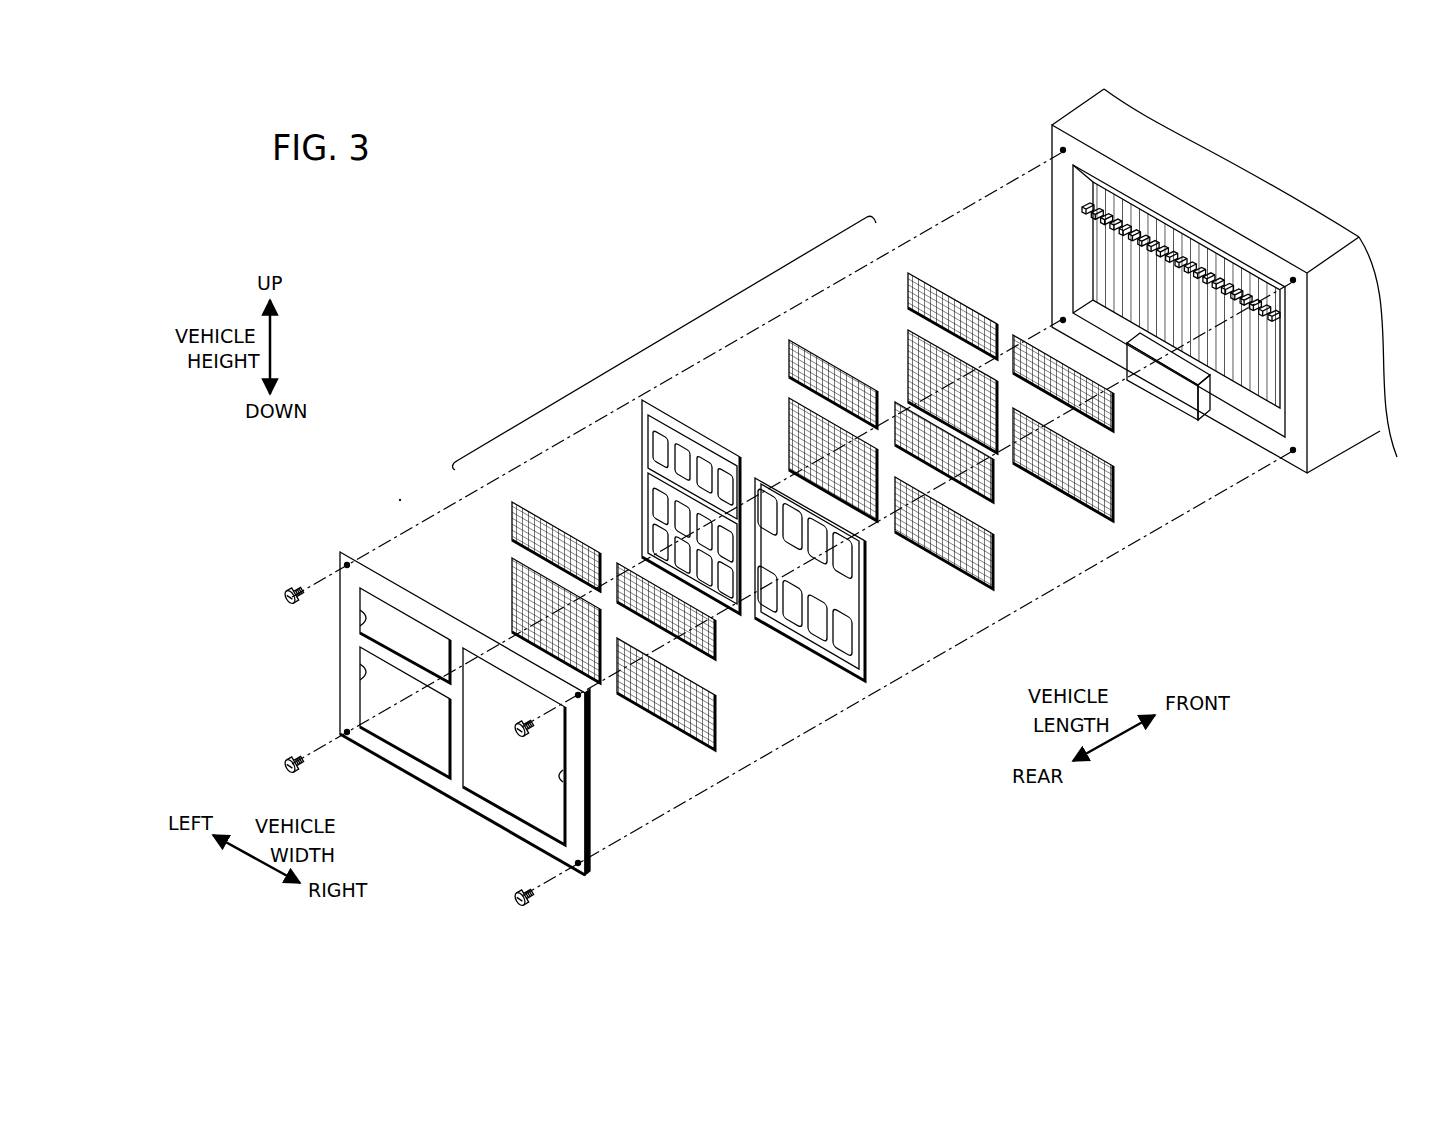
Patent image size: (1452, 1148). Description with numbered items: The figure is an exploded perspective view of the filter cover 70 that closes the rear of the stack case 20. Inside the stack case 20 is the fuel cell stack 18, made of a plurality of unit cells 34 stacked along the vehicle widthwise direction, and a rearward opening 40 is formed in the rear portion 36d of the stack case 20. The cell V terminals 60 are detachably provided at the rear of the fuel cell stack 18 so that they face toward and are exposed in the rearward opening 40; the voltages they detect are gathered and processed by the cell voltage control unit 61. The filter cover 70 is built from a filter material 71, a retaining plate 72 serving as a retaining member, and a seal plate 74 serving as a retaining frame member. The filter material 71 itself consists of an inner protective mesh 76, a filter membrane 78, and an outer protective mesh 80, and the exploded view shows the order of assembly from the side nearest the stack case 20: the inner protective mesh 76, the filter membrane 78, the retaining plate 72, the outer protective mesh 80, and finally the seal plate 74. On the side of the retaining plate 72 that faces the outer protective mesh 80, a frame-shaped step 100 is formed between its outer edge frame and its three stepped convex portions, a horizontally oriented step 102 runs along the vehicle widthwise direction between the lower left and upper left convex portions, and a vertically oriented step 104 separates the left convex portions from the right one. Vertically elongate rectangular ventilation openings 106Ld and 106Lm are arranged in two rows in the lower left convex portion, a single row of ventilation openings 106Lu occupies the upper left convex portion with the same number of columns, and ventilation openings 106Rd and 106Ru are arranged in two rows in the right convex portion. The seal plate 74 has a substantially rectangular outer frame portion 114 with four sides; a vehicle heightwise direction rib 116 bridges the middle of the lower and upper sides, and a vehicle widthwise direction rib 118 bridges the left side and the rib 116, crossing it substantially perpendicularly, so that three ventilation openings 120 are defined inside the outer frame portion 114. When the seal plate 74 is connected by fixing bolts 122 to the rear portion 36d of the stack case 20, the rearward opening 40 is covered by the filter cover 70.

The stack case 20 is at (1224, 296).
The fuel cell stack 18 is at (1198, 282).
The unit cells 34 is at (1186, 282).
The rear portion 36d is at (1093, 165).
The rearward opening 40 is at (1152, 215).
The cell V terminals 60 is at (1266, 297).
The cell voltage control unit 61 is at (1199, 419).
The filter cover 70 is at (395, 496).
The filter material 71 is at (664, 331).
The retaining plate 72 is at (834, 550).
The seal plate 74 is at (492, 713).
The inner protective mesh 76 is at (1115, 490).
The filter membrane 78 is at (996, 565).
The outer protective mesh 80 is at (716, 718).
The frame-shaped step 100 is at (840, 566).
The horizontally oriented step 102 is at (672, 528).
The vertically oriented step 104 is at (799, 550).
The ventilation openings 106Lu is at (693, 468).
The ventilation openings 106Lm is at (693, 525).
The ventilation openings 106Ld is at (672, 508).
The ventilation openings 106Ru is at (805, 534).
The ventilation openings 106Rd is at (805, 611).
The outer frame portion 114 is at (436, 768).
The vehicle heightwise direction rib 116 is at (466, 706).
The vehicle widthwise direction rib 118 is at (395, 658).
The ventilation openings 120 is at (360, 670).
The fixing bolts 122 is at (508, 893).